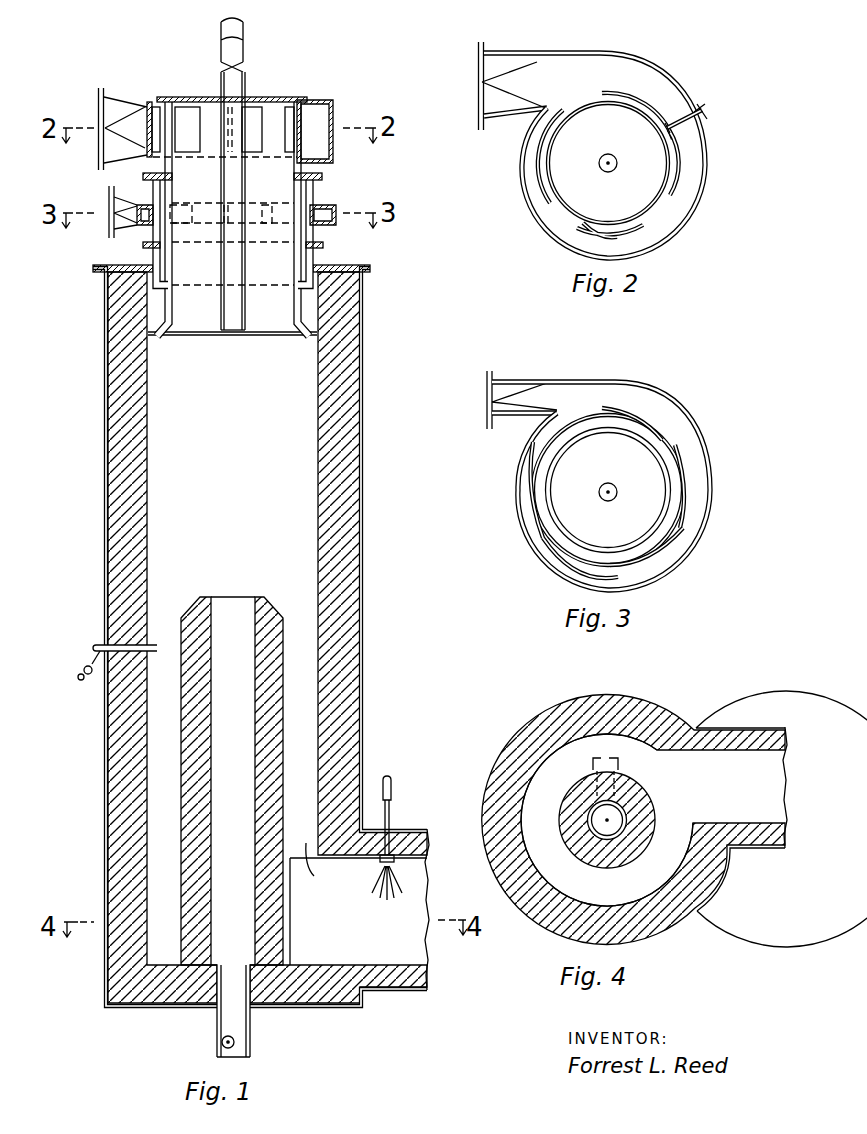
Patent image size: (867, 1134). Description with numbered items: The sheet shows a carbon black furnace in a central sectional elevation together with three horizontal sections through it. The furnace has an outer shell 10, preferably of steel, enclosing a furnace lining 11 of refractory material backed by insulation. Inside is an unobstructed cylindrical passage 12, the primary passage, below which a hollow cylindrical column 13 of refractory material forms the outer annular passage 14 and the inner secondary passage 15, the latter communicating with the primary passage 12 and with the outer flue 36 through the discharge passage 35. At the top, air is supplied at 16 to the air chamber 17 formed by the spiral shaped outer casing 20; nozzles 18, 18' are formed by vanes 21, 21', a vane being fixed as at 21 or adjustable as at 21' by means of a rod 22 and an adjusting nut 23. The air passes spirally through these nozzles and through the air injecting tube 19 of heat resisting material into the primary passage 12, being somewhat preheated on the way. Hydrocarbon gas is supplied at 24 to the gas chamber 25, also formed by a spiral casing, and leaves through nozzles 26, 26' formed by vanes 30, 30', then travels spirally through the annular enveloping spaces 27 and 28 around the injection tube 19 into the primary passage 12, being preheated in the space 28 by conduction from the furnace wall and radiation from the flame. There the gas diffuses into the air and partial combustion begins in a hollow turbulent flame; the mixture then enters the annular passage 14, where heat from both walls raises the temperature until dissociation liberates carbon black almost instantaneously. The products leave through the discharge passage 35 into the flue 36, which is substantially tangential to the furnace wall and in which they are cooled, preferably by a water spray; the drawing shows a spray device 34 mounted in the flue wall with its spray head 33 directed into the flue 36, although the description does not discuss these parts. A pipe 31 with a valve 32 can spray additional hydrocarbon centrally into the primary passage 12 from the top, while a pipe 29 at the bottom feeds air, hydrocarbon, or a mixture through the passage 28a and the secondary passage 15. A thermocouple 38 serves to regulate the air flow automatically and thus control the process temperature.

In FIG. 1, the outer shell 10 is at (107, 580).
In FIG. 4, the outer shell 10 is at (503, 750).
In FIG. 1, the furnace lining 11 is at (123, 537).
In FIG. 4, the furnace lining 11 is at (557, 730).
In FIG. 1, the unobstructed cylindrical passage 12 is at (282, 450).
In FIG. 1, the hollow cylindrical column 13 is at (198, 723).
In FIG. 4, the hollow cylindrical column 13 is at (572, 807).
In FIG. 1, the outer annular passage 14 is at (300, 662).
In FIG. 4, the outer annular passage 14 is at (662, 862).
In FIG. 1, the inner passage 15 is at (238, 702).
In FIG. 1, the air inlet 16 is at (102, 152).
In FIG. 2, the air inlet 16 is at (482, 80).
In FIG. 1, the air chamber 17 is at (322, 122).
In FIG. 2, the air chamber 17 is at (662, 97).
In FIG. 1, the nozzle 18 is at (221, 129).
In FIG. 2, the nozzle 18 is at (581, 153).
In FIG. 1, the nozzle 18' is at (268, 129).
In FIG. 2, the nozzle 18' is at (621, 186).
In FIG. 1, the air injecting tube 19 is at (293, 312).
In FIG. 3, the air injecting tube 19 is at (653, 533).
In FIG. 2, the outer casing 20 is at (650, 67).
In FIG. 2, the vane 21 is at (637, 107).
In FIG. 2, the vane 21' is at (688, 162).
In FIG. 2, the rod 22 is at (694, 121).
In FIG. 2, the adjusting nut 23 is at (706, 108).
In FIG. 1, the gas inlet 24 is at (105, 230).
In FIG. 3, the gas inlet 24 is at (488, 393).
In FIG. 1, the gas chamber 25 is at (325, 213).
In FIG. 3, the gas chamber 25 is at (677, 432).
In FIG. 1, the nozzle 26 is at (219, 227).
In FIG. 3, the nozzle 26 is at (574, 495).
In FIG. 1, the nozzle 26' is at (279, 227).
In FIG. 3, the nozzle 26' is at (646, 511).
In FIG. 1, the annular enveloping space 27 is at (302, 257).
In FIG. 3, the annular enveloping space 27 is at (543, 482).
In FIG. 1, the annular enveloping space 28 is at (302, 308).
In FIG. 1, the passage 28a is at (237, 983).
In FIG. 1, the pipe 29 is at (220, 1043).
In FIG. 3, the pipe 29 is at (670, 408).
In FIG. 4, the pipe 29 is at (592, 765).
In FIG. 3, the vane 30 is at (632, 414).
In FIG. 3, the vane 30' is at (695, 486).
In FIG. 1, the pipe 31 is at (230, 326).
In FIG. 2, the pipe 31 is at (600, 170).
In FIG. 3, the pipe 31 is at (602, 495).
In FIG. 1, the valve 32 is at (244, 68).
In FIG. 1, the igniter electrode 33 is at (394, 859).
In FIG. 1, the spark plug 34 is at (393, 803).
In FIG. 1, the discharge passage 35 is at (300, 851).
In FIG. 1, the outer flue 36 is at (405, 982).
In FIG. 4, the outer flue 36 is at (748, 808).
In FIG. 1, the thermocouple 38 is at (77, 675).